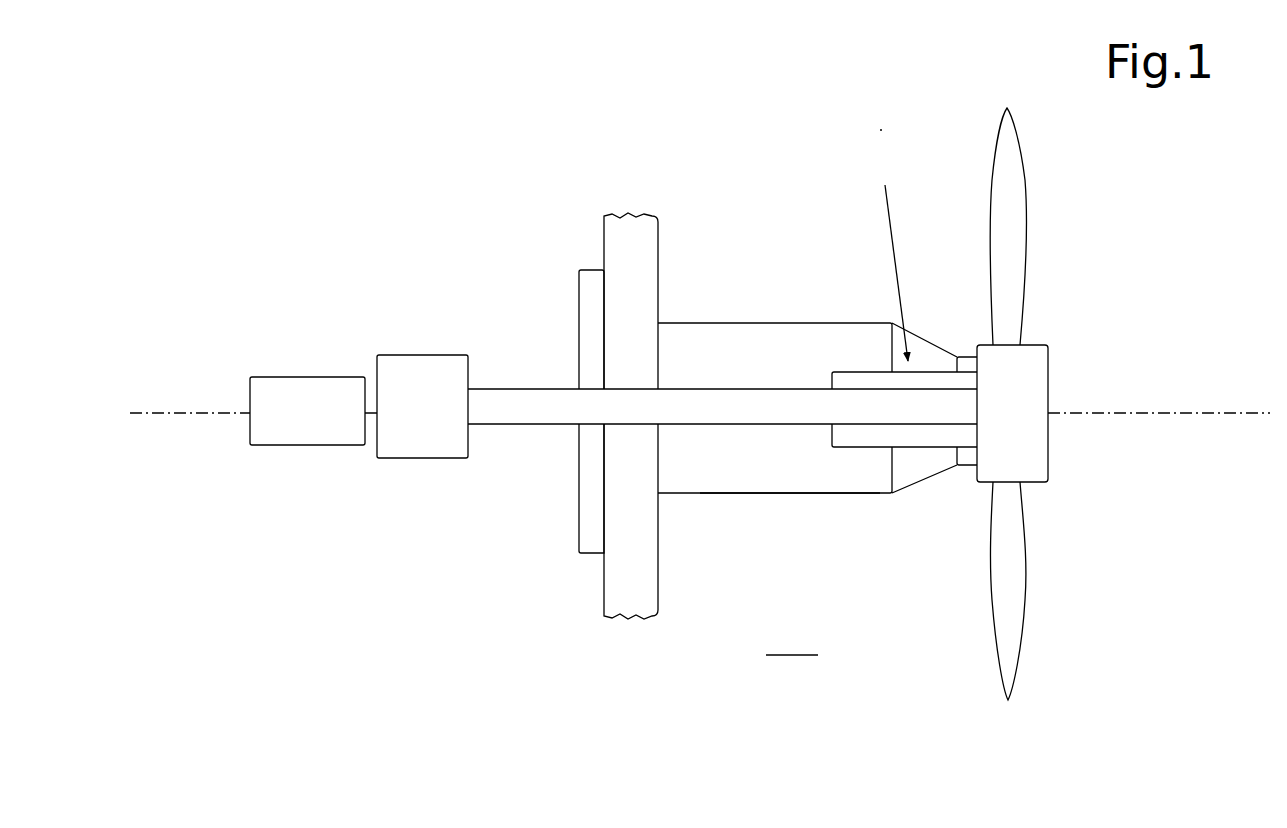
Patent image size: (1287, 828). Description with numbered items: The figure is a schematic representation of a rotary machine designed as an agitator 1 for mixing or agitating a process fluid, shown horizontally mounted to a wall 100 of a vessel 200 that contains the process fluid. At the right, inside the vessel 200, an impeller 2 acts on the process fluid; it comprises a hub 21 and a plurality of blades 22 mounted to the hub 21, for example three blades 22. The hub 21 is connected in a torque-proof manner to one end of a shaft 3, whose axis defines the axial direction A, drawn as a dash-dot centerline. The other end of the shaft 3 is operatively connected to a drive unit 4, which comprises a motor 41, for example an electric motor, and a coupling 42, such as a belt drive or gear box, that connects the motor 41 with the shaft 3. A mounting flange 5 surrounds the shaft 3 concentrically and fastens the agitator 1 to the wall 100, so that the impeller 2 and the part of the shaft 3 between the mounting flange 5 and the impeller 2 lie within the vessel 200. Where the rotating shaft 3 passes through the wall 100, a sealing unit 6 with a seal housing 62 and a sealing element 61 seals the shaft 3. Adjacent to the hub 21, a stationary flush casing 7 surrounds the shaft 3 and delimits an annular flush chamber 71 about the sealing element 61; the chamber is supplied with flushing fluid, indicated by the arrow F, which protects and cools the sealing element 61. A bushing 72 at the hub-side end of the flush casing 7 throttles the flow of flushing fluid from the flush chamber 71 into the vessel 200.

The agitator 1 is at (894, 116).
The impeller 2 is at (1043, 404).
The hub 21 is at (1048, 452).
The blades 22 is at (1027, 197).
The shaft 3 is at (518, 407).
The drive unit 4 is at (360, 396).
The motor 41 is at (296, 447).
The coupling 42 is at (415, 460).
The mounting flange 5 is at (586, 297).
The sealing unit 6 is at (719, 311).
The sealing element 61 is at (866, 385).
The seal housing 62 is at (717, 497).
The flush casing 7 is at (904, 392).
The flush chamber 71 is at (916, 462).
The bushing 72 is at (967, 355).
The wall 100 is at (643, 255).
The vessel 200 is at (792, 633).
The flushing fluid F is at (892, 212).
The axial direction A is at (1215, 410).